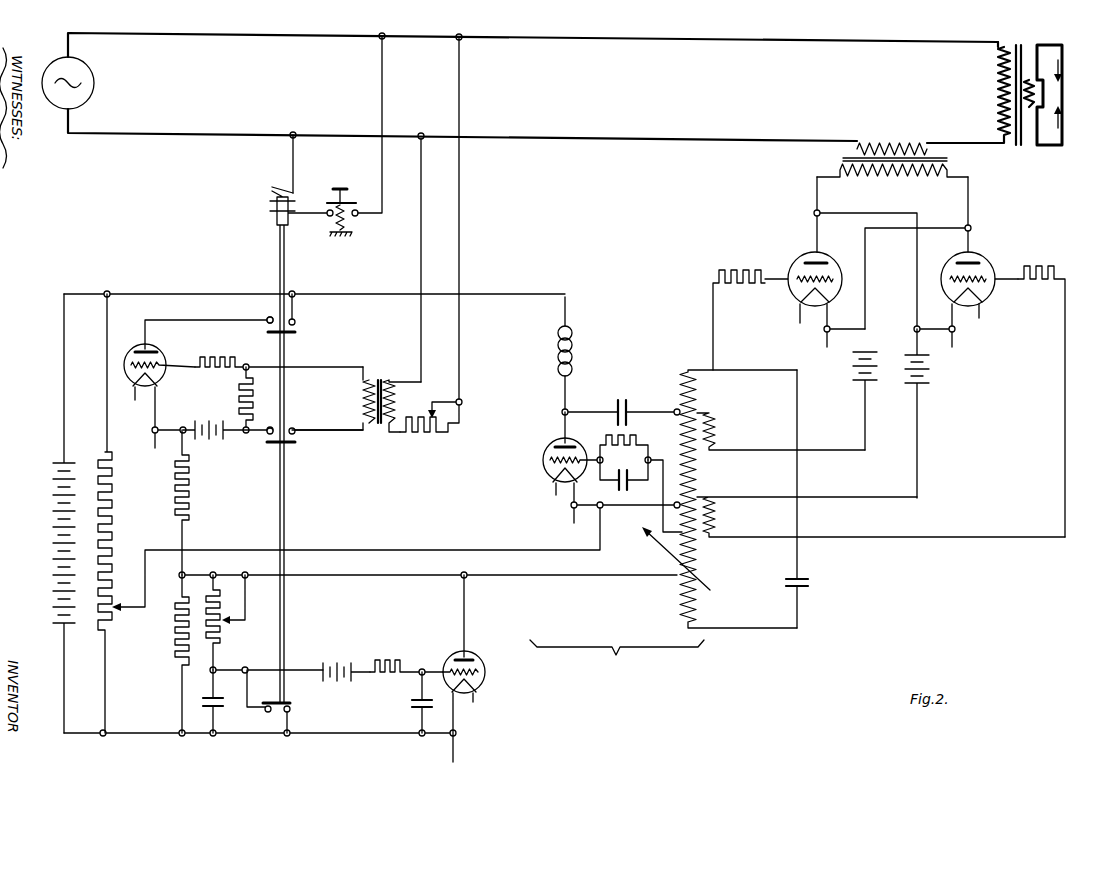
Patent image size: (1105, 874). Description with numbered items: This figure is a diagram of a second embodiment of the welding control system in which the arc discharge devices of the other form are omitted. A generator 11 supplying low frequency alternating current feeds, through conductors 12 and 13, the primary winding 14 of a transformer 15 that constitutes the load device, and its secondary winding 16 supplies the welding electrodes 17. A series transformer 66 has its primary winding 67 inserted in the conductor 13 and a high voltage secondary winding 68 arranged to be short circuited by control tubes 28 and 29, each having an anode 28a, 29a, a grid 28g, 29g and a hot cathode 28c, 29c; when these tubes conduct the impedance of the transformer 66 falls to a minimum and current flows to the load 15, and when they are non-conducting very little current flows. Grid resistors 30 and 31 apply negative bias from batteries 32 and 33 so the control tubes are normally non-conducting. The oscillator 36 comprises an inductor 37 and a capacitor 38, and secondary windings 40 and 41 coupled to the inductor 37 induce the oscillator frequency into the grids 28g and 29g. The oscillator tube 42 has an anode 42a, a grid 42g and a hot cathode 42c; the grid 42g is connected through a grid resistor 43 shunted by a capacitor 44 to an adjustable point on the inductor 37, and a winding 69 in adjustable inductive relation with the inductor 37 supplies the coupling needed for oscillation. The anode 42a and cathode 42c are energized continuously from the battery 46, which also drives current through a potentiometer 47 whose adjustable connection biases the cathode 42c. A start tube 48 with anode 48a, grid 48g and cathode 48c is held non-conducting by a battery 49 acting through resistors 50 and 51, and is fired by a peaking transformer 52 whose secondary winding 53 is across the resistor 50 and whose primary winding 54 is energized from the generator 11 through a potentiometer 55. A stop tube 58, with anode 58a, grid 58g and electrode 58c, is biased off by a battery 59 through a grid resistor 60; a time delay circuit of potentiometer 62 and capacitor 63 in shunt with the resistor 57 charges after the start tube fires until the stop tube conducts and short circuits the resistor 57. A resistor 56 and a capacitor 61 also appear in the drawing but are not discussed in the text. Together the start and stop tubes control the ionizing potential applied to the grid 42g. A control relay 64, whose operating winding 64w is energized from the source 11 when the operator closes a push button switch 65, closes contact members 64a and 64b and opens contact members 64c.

The source of low frequency alternating current 11 is at (115, 65).
The conductor 12 is at (868, 40).
The conductor 13 is at (805, 140).
The primary winding 14 is at (998, 93).
The transformer 15 is at (1026, 33).
The secondary winding 16 is at (1033, 88).
The welding electrodes 17 is at (1062, 95).
The control tube 28 is at (801, 241).
The anode 28a is at (819, 262).
The control electrode or grid 28g is at (830, 276).
The hot cathode 28c is at (828, 302).
The control tube 29 is at (1006, 217).
The anode 29a is at (956, 262).
The control electrode or grid 29g is at (949, 278).
The hot cathode 29c is at (948, 303).
The grid resistor 30 is at (742, 270).
The grid resistor 31 is at (1042, 267).
The battery 32 is at (848, 357).
The battery 33 is at (926, 363).
The oscillator 36 is at (630, 616).
The inductor 37 is at (700, 482).
The capacitor 38 is at (804, 580).
The secondary winding 40 is at (716, 431).
The secondary winding 41 is at (716, 523).
The oscillator tube 42 is at (538, 427).
The anode 42a is at (552, 446).
The control electrode or grid 42g is at (547, 463).
The hot cathode 42c is at (552, 480).
The grid resistor 43 is at (641, 437).
The capacitor 44 is at (630, 483).
The battery 46 is at (52, 528).
The potentiometer 47 is at (113, 530).
The start tube 48 is at (174, 338).
The anode 48a is at (160, 352).
The control electrode or grid 48g is at (162, 364).
The hot cathode 48c is at (159, 384).
The battery 49 is at (221, 441).
The resistor 50 is at (237, 401).
The resistor 51 is at (226, 359).
The peaking transformer 52 is at (395, 364).
The secondary winding 53 is at (361, 397).
The primary winding 54 is at (399, 396).
The potentiometer 55 is at (426, 434).
The resistor 56 is at (191, 500).
The resistor 57 is at (171, 637).
The stop tube 58 is at (451, 642).
The anode 58a is at (469, 659).
The control electrode or grid 58g is at (485, 670).
The cathode 58c is at (483, 689).
The battery 59 is at (338, 662).
The grid resistor 60 is at (391, 661).
The condenser 61 is at (426, 708).
The potentiometer 62 is at (218, 610).
The capacitor 63 is at (216, 697).
The control relay 64 is at (254, 226).
The contact members 64a is at (298, 326).
The contact members 64b is at (297, 436).
The contact members 64c is at (270, 712).
The operating winding 64w is at (293, 187).
The push button switch 65 is at (385, 244).
The series transformer 66 is at (793, 169).
The primary winding 67 is at (893, 142).
The high voltage secondary winding 68 is at (901, 176).
The winding 69 is at (657, 549).